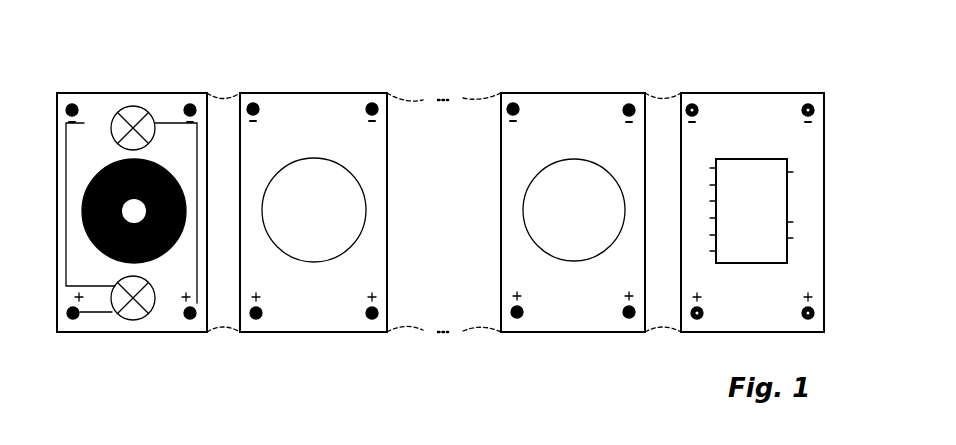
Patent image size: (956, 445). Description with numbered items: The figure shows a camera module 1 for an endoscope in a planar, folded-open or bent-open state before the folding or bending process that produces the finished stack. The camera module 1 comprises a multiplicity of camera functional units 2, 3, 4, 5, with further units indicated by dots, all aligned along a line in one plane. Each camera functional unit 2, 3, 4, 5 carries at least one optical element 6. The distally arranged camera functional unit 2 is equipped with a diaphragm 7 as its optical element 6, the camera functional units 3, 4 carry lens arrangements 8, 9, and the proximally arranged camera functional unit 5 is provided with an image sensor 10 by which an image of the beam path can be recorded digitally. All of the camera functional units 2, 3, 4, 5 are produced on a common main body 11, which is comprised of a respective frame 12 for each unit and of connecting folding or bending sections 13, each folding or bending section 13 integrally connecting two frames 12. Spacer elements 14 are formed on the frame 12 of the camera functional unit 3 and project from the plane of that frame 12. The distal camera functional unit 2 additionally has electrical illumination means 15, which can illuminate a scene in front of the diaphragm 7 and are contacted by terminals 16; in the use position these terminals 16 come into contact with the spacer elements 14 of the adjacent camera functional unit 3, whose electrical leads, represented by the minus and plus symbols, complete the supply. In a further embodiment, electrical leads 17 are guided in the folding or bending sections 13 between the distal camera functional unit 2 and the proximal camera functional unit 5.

The camera module 1 is at (483, 53).
The camera functional unit 2 is at (103, 375).
The camera functional unit 3 is at (303, 376).
The camera functional unit 4 is at (568, 375).
The camera functional unit 5 is at (708, 373).
The optical element 6 is at (97, 157).
The diaphragm 7 is at (158, 262).
The lens arrangement 8 is at (330, 256).
The lens arrangement 9 is at (562, 252).
The image sensor 10 is at (745, 258).
The main body 11 is at (188, 332).
The frame 12 is at (178, 93).
The folding or bending section 13 is at (223, 328).
The spacer element 14 is at (253, 103).
The illumination means 15 is at (133, 106).
The terminal 16 is at (72, 104).
The electrical lead 17 is at (140, 110).